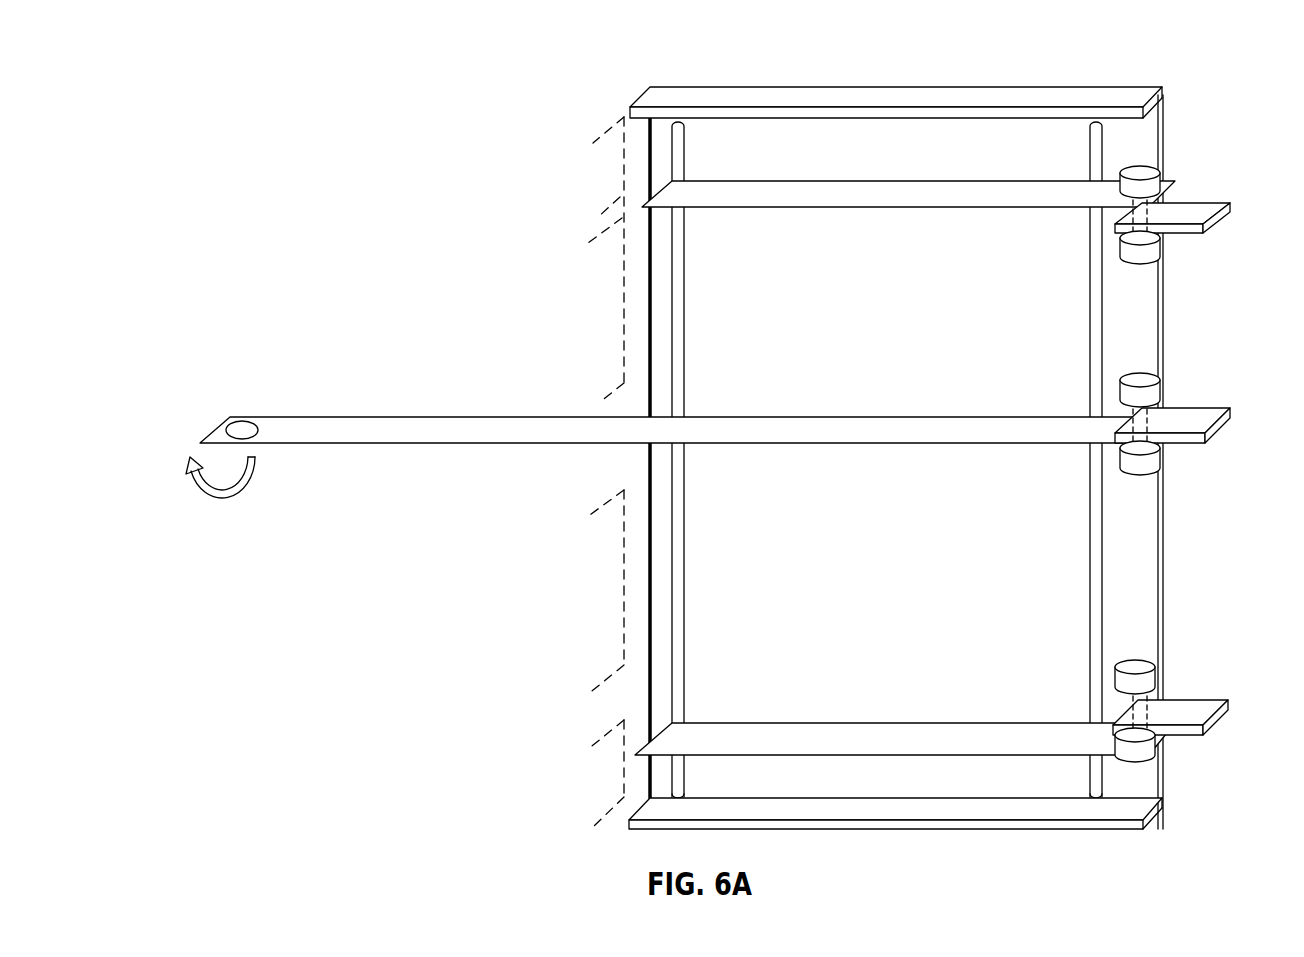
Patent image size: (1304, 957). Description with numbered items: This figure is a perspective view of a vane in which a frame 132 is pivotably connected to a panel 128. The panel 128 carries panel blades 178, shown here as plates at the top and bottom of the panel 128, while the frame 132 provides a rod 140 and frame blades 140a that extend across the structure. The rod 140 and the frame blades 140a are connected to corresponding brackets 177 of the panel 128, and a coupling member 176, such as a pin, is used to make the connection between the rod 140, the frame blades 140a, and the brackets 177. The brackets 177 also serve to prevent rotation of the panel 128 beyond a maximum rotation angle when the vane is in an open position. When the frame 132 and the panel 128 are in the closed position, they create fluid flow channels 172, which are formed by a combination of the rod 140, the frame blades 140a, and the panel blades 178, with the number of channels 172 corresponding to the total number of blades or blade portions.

The frame 132 is at (352, 355).
The panel 128 is at (1138, 334).
The panel blade 178 is at (970, 95).
The rod 140 is at (410, 443).
The frame blade 140a is at (798, 195).
The fluid flow channel 172 is at (583, 176).
The coupling member 176 is at (1150, 172).
The bracket 177 is at (1207, 206).